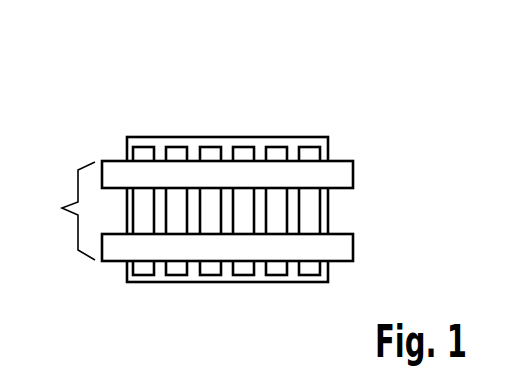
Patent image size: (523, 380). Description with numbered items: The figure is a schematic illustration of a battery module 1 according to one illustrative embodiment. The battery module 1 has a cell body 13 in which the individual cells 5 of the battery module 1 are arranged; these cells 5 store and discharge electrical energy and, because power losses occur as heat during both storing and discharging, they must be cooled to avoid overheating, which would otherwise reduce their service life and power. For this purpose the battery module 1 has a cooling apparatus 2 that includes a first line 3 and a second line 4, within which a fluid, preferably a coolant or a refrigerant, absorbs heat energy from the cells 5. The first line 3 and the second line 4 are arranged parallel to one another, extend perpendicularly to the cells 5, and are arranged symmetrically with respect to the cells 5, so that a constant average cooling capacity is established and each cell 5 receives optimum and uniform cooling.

The battery module 1 is at (165, 85).
The cooling apparatus 2 is at (67, 211).
The first line 3 is at (356, 244).
The second line 4 is at (356, 170).
The individual cells 5 is at (144, 270).
The cell body 13 is at (278, 137).